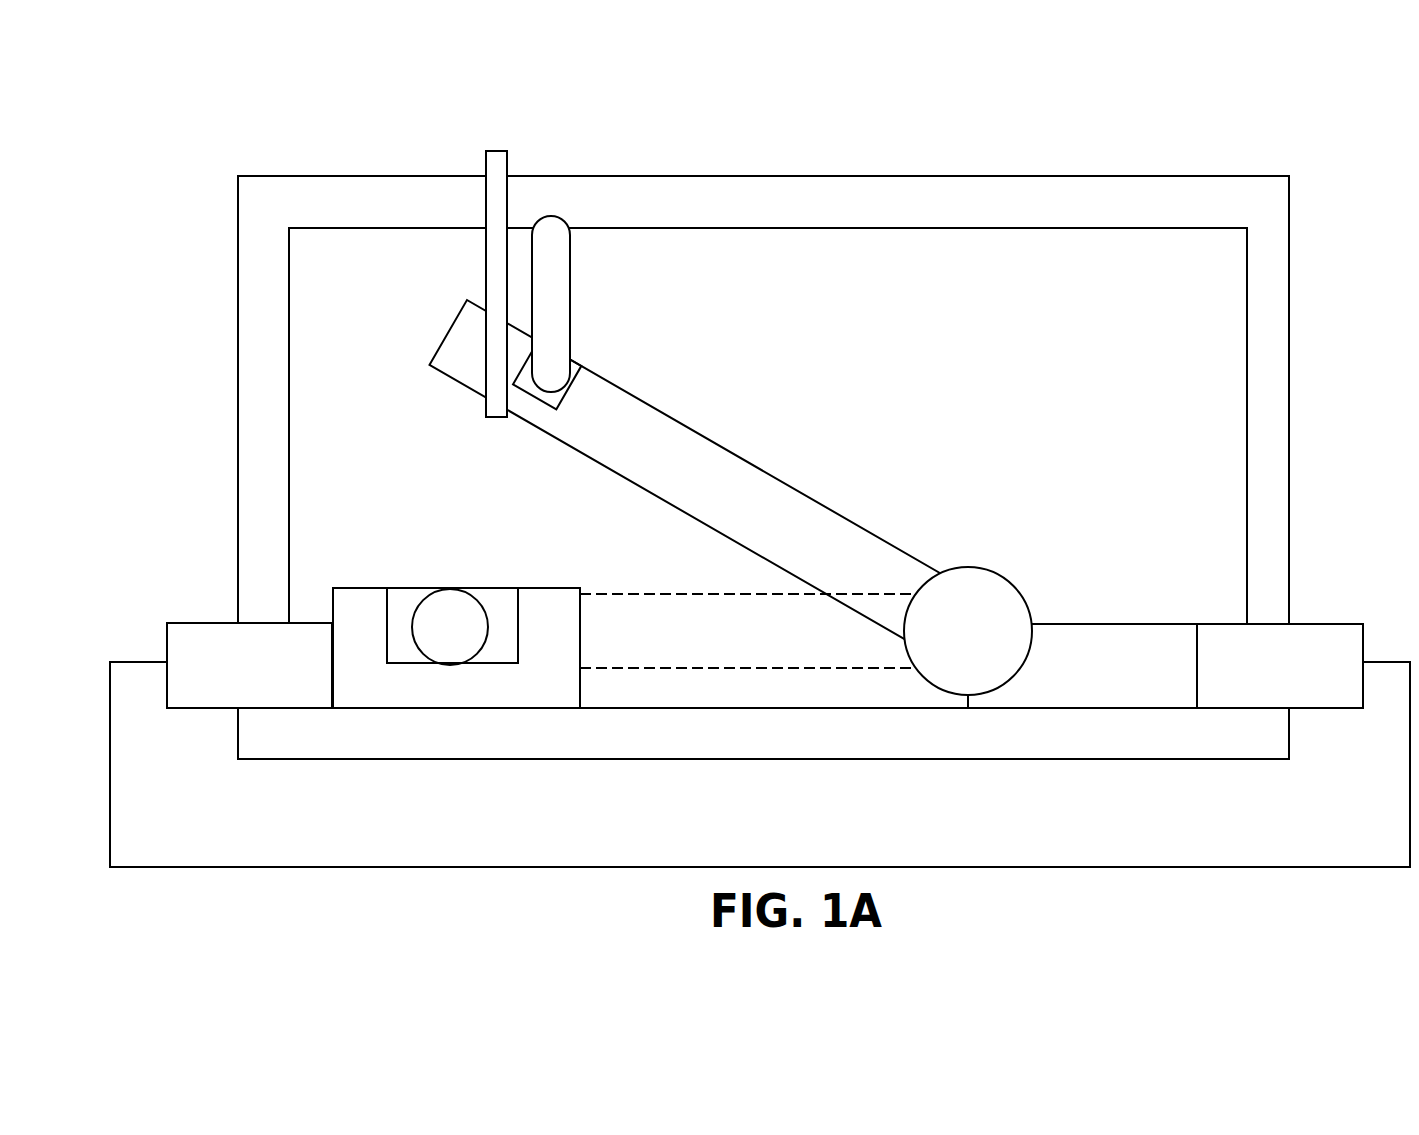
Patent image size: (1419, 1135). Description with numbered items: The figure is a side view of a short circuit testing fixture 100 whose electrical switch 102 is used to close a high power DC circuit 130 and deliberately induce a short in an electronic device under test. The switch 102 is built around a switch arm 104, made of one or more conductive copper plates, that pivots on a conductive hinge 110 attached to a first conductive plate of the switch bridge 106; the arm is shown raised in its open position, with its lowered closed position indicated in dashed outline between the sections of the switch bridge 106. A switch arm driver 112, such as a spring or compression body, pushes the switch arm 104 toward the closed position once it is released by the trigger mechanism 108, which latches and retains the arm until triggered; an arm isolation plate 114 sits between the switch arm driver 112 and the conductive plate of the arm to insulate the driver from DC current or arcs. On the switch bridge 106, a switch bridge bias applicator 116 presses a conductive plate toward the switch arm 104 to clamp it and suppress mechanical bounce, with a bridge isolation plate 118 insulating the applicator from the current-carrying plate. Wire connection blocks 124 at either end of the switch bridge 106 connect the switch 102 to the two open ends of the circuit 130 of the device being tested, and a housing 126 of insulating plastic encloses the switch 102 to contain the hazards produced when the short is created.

The short circuit testing fixture 100 is at (1278, 63).
The electrical switch 102 is at (1038, 411).
The switch arm 104 is at (767, 470).
The switch bridge 106 is at (368, 587).
The trigger mechanism 108 is at (502, 150).
The hinge 110 is at (963, 568).
The switch arm driver 112 is at (570, 268).
The arm isolation plate 114 is at (573, 363).
The switch bridge bias applicator 116 is at (489, 612).
The bridge isolation plate 118 is at (408, 595).
The wire connection block 124 is at (182, 708).
The housing 126 is at (285, 176).
The high power DC circuit 130 is at (127, 662).